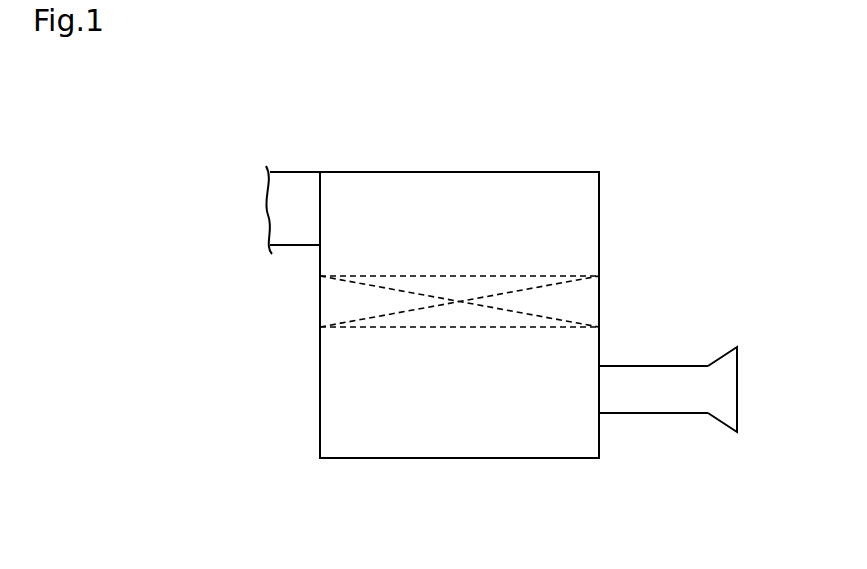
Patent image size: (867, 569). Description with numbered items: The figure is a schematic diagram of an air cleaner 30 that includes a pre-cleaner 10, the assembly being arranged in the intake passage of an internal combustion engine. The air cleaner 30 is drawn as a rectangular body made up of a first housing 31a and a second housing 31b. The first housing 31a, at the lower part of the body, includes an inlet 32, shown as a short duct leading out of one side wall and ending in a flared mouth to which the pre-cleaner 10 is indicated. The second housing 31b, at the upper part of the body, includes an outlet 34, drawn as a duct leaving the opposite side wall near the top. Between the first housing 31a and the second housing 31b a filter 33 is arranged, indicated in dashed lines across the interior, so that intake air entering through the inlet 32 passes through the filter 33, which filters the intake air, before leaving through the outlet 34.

The pre-cleaner 10 is at (694, 350).
The air cleaner 30 is at (612, 148).
The first housing 31a is at (320, 412).
The second housing 31b is at (599, 208).
The inlet 32 is at (599, 400).
The filter 33 is at (571, 276).
The outlet 34 is at (300, 172).